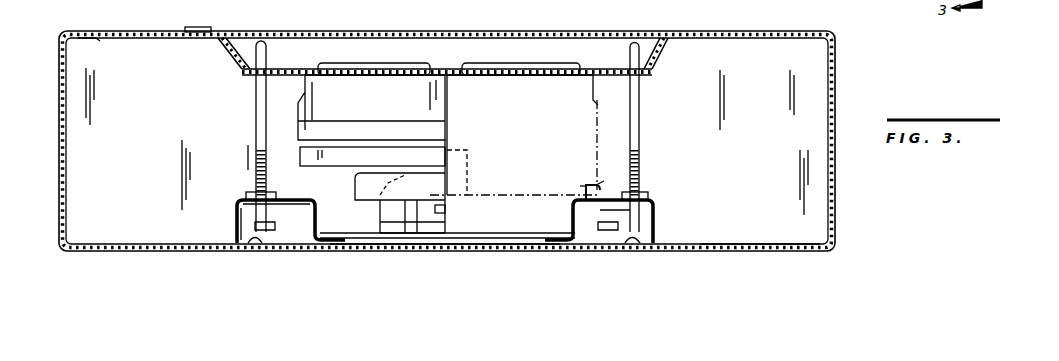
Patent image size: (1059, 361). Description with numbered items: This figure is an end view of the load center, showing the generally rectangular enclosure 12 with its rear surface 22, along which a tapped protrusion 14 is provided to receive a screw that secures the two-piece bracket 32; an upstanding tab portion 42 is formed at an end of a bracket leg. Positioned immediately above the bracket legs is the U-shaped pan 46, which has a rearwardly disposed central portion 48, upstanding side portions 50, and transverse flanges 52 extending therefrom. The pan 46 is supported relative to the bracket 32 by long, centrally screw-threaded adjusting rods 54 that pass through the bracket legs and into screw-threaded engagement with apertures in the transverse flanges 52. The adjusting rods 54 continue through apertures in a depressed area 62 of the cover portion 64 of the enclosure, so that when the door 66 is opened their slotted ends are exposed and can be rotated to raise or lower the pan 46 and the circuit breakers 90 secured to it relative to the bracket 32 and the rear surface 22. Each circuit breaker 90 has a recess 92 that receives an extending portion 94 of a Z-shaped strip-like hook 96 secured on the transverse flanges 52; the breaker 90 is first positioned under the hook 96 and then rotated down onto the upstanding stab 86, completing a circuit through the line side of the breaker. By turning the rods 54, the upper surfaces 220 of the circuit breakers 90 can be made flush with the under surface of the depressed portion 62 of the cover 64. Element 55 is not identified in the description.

The enclosure 12 is at (840, 0).
The tapped protrusion 14 is at (780, 31).
The rear surface 22 is at (760, 246).
The two-piece bracket 32 is at (538, 248).
The upstanding tab portion 42 is at (653, 218).
The U-shaped pan 46 is at (333, 228).
The central portion 48 is at (340, 236).
The upstanding side portion 50 is at (312, 210).
The transverse flange 52 is at (292, 200).
The adjusting rod 54 is at (256, 118).
The top wall step 55 is at (262, 0).
The depressed area 62 is at (614, 70).
The cover portion 64 is at (147, 31).
The door 66 is at (522, 31).
The upstanding stab 86 is at (482, 156).
The circuit breaker 90 is at (382, 110).
The recess 92 is at (590, 183).
The extending portion 94 is at (582, 185).
The Z-shaped strip-like hook 96 is at (599, 183).
The upper surface 220 is at (313, 58).